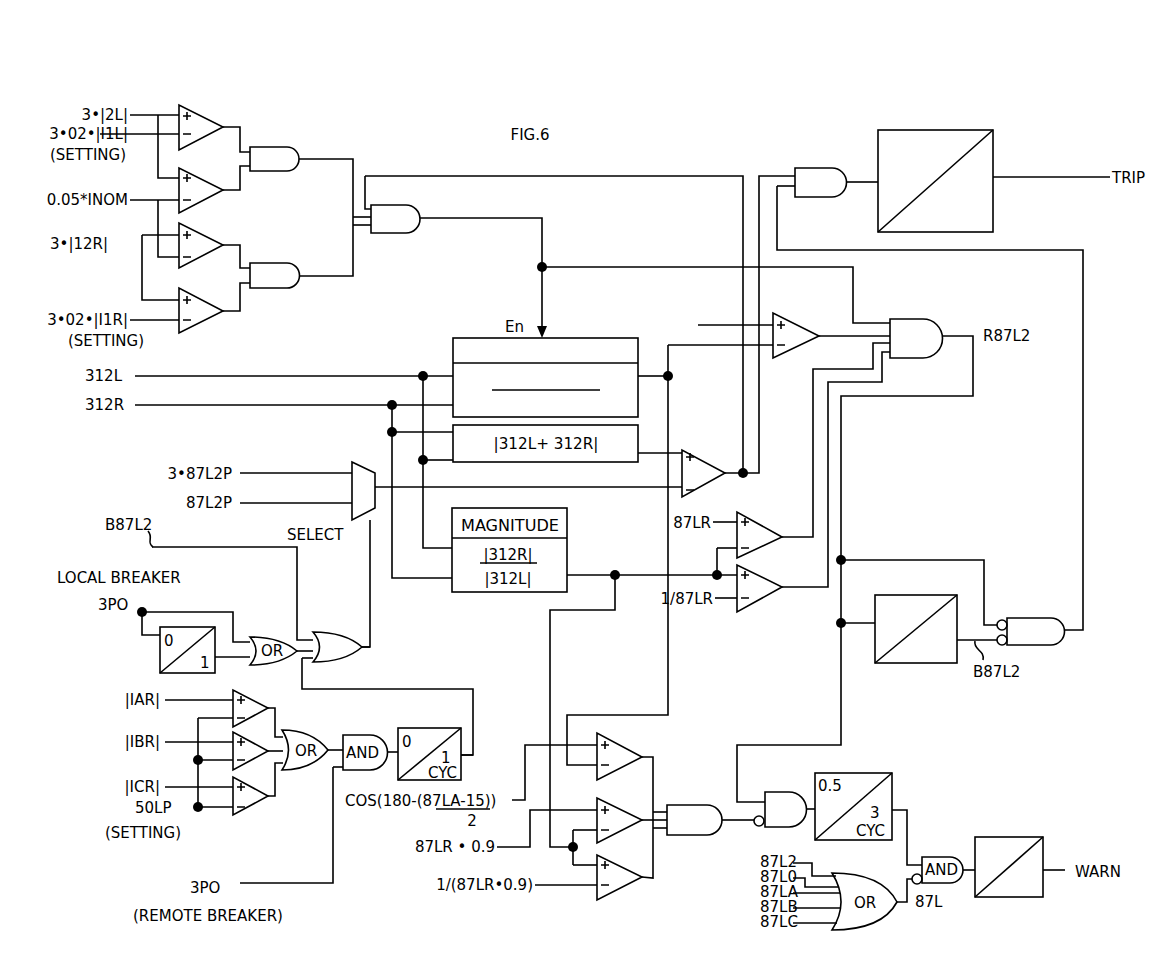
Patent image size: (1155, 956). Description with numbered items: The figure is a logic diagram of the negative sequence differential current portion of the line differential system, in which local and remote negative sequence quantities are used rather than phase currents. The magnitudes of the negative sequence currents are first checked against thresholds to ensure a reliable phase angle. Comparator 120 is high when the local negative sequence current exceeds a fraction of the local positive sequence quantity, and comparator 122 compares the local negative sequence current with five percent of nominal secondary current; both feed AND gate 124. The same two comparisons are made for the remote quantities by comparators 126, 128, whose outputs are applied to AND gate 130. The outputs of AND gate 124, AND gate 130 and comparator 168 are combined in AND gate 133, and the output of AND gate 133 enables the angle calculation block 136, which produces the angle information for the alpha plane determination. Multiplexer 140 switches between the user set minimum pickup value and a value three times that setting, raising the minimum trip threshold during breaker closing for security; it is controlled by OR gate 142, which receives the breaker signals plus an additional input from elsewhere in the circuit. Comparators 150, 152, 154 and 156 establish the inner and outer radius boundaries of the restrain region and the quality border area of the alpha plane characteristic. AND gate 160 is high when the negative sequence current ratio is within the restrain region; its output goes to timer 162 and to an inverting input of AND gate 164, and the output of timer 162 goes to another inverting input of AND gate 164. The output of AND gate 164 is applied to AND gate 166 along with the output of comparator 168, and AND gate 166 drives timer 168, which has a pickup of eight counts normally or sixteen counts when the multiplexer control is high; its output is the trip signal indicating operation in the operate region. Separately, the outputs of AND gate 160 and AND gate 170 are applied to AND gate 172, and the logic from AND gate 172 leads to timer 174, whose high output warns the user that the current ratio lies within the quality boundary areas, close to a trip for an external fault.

The comparator 120 is at (214, 115).
The comparator 122 is at (228, 200).
The AND gate 124 is at (288, 148).
The comparator 126 is at (222, 235).
The comparator 128 is at (217, 326).
The AND gate 130 is at (300, 264).
The AND gate 133 is at (394, 204).
The angle calculation block 136 is at (575, 337).
The multiplexer 140 is at (368, 462).
The OR gate 142 is at (348, 664).
The comparator 150 is at (616, 804).
The comparator 152 is at (770, 521).
The comparator 154 is at (760, 607).
The comparator 156 is at (632, 882).
The AND gate 160 is at (933, 320).
The timer 162 is at (918, 664).
The AND gate 164 is at (1050, 646).
The AND gate 166 is at (808, 168).
The timer 168 is at (692, 452).
The AND gate 170 is at (712, 836).
The AND gate 172 is at (774, 792).
The timer 174 is at (996, 838).